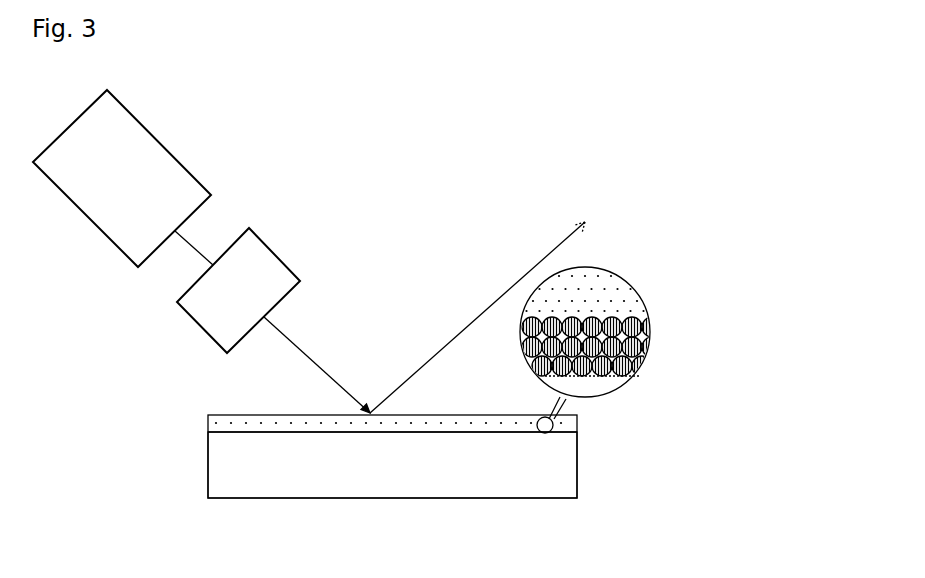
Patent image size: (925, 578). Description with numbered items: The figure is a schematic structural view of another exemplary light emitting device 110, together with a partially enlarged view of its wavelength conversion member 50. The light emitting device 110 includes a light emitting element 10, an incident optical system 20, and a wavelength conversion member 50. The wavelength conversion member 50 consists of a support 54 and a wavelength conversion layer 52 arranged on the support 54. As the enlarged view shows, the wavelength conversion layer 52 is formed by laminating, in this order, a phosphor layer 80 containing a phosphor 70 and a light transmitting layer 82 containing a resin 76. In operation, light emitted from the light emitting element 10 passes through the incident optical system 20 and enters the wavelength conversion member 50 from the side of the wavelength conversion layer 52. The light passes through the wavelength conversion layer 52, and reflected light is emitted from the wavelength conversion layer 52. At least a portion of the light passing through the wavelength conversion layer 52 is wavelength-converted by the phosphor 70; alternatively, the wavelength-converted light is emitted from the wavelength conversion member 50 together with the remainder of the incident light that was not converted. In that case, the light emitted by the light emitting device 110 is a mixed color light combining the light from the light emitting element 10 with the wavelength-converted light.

The light emitting element 10 is at (160, 167).
The incident optical system 20 is at (258, 272).
The wavelength conversion member 50 is at (518, 401).
The wavelength conversion layer 52 is at (569, 421).
The support 54 is at (565, 480).
The phosphor 70 is at (534, 368).
The resin 76 is at (582, 309).
The phosphor layer 80 is at (582, 350).
The light transmitting layer 82 is at (659, 270).
The light emitting device 110 is at (409, 571).